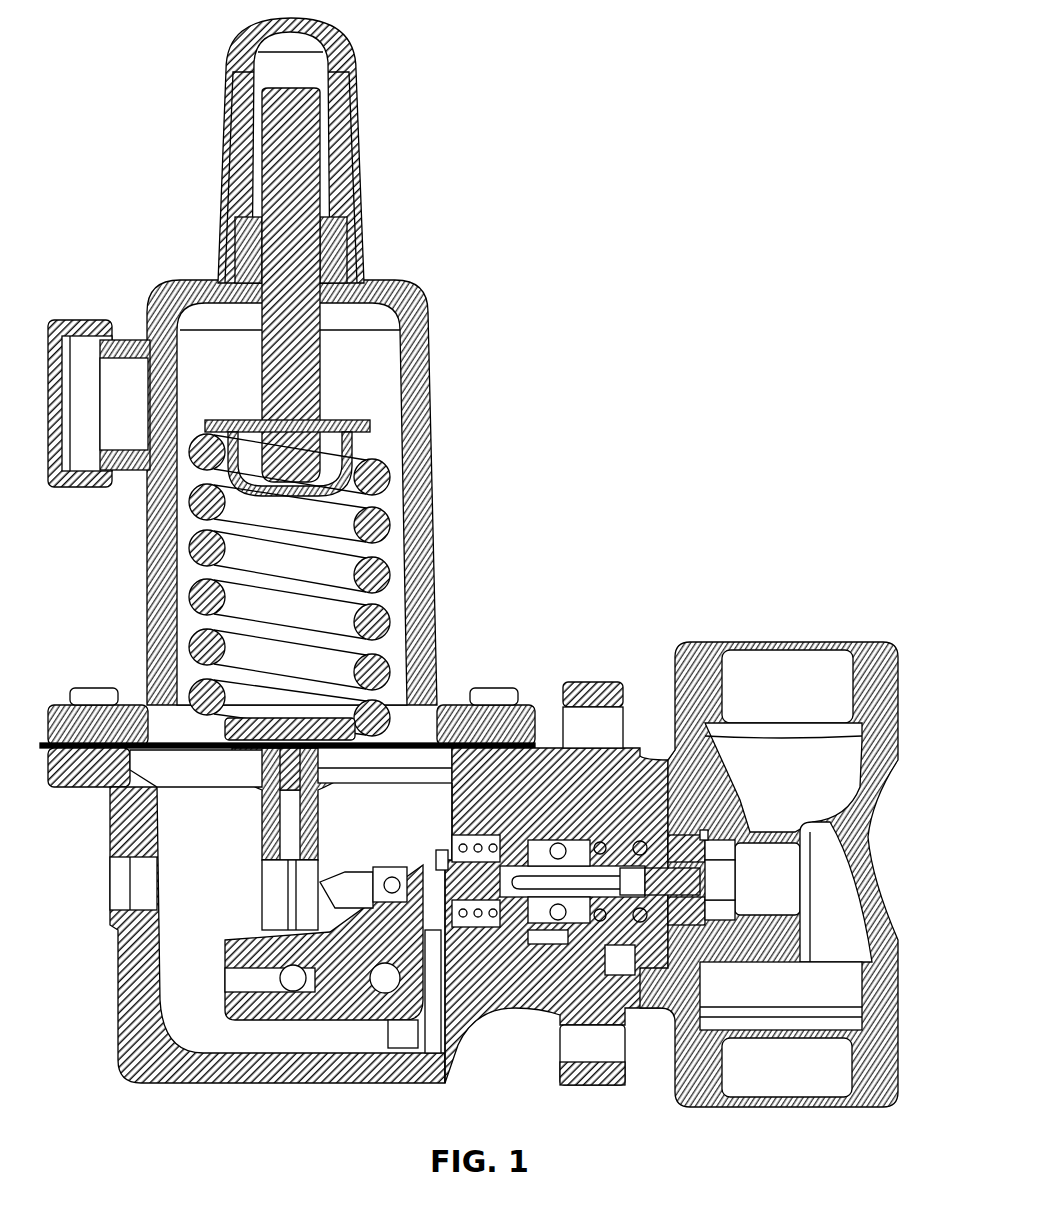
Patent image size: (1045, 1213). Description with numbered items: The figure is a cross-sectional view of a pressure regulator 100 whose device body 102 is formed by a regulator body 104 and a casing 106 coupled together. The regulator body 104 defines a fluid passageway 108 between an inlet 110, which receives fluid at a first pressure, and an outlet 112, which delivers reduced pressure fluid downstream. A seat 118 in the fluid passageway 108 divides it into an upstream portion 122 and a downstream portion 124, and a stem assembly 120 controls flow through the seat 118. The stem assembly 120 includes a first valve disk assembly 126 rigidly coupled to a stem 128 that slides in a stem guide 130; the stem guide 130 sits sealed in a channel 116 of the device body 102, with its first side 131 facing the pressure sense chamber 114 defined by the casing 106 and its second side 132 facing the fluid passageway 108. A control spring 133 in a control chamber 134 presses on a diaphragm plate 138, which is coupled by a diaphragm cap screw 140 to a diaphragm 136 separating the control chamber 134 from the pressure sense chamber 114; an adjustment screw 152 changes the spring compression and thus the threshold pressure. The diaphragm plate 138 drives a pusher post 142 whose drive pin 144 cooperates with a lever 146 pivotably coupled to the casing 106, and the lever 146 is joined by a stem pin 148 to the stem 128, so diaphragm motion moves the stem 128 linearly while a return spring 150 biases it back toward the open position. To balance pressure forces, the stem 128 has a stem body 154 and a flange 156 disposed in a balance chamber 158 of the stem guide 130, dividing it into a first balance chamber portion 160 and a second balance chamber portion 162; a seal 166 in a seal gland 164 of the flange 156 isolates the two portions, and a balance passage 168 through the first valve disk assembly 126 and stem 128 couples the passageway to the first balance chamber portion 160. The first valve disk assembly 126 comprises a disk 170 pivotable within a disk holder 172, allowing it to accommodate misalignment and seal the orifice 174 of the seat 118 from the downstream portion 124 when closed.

The pressure regulator 100 is at (492, 122).
The device body 102 is at (585, 690).
The regulator body 104 is at (872, 832).
The casing 106 is at (118, 985).
The fluid passageway 108 is at (781, 996).
The inlet 110 is at (795, 1118).
The outlet 112 is at (775, 628).
The pressure sense chamber 114 is at (180, 829).
The channel 116 is at (488, 805).
The seat 118 is at (760, 822).
The stem assembly 120 is at (545, 820).
The upstream portion 122 is at (850, 910).
The downstream portion 124 is at (835, 685).
The first valve disk assembly 126 is at (722, 835).
The stem 128 is at (660, 840).
The stem guide 130 is at (590, 820).
The first side 131 is at (440, 848).
The second side 132 is at (685, 835).
The control spring 133 is at (386, 478).
The control chamber 134 is at (375, 375).
The diaphragm 136 is at (180, 722).
The diaphragm plate 138 is at (205, 690).
The diaphragm cap screw 140 is at (290, 715).
The pusher post 142 is at (285, 925).
The drive pin 144 is at (290, 985).
The lever 146 is at (325, 1018).
The stem pin 148 is at (440, 865).
The return spring 150 is at (440, 935).
The adjustment screw 152 is at (268, 150).
The stem body 154 is at (620, 960).
The flange 156 is at (560, 950).
The balance chamber 158 is at (580, 800).
The first balance chamber portion 160 is at (538, 800).
The second balance chamber portion 162 is at (593, 715).
The seal gland 164 is at (545, 925).
The seal 166 is at (518, 932).
The balance passage 168 is at (565, 925).
The disk 170 is at (735, 960).
The disk holder 172 is at (720, 840).
The orifice 174 is at (767, 879).